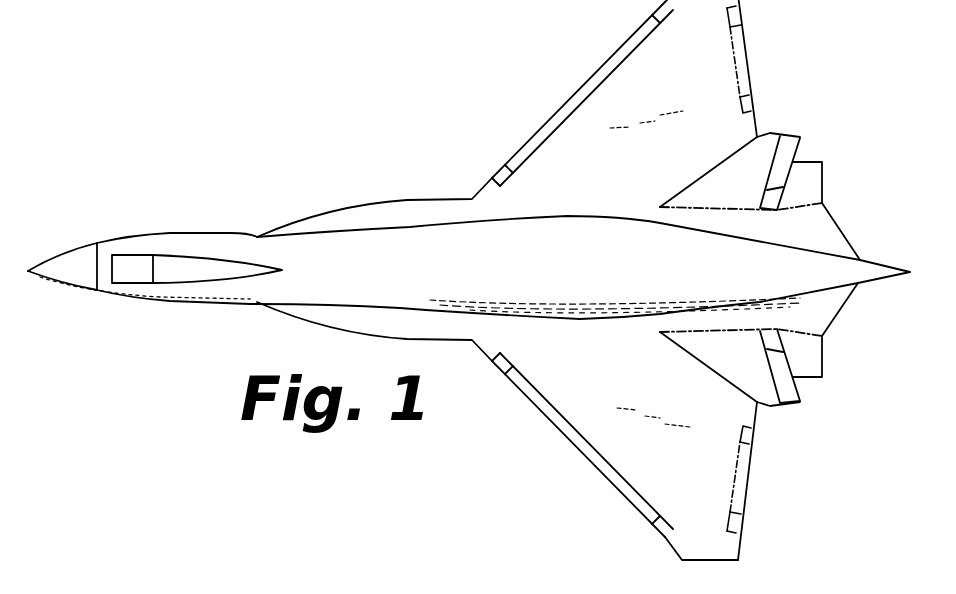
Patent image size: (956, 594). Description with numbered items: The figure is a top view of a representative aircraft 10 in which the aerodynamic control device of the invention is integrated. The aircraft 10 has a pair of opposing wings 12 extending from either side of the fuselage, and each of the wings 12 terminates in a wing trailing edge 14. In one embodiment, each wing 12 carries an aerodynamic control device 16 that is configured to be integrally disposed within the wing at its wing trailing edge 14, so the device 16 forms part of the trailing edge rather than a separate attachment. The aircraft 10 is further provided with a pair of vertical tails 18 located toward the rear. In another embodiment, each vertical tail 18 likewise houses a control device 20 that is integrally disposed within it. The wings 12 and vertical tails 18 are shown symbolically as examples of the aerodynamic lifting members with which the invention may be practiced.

The aircraft 10 is at (513, 279).
The wings 12 is at (653, 85).
The wing trailing edges 14 is at (755, 123).
The aerodynamic control device 16 is at (777, 48).
The vertical tails 18 is at (707, 182).
The control device 20 is at (812, 147).